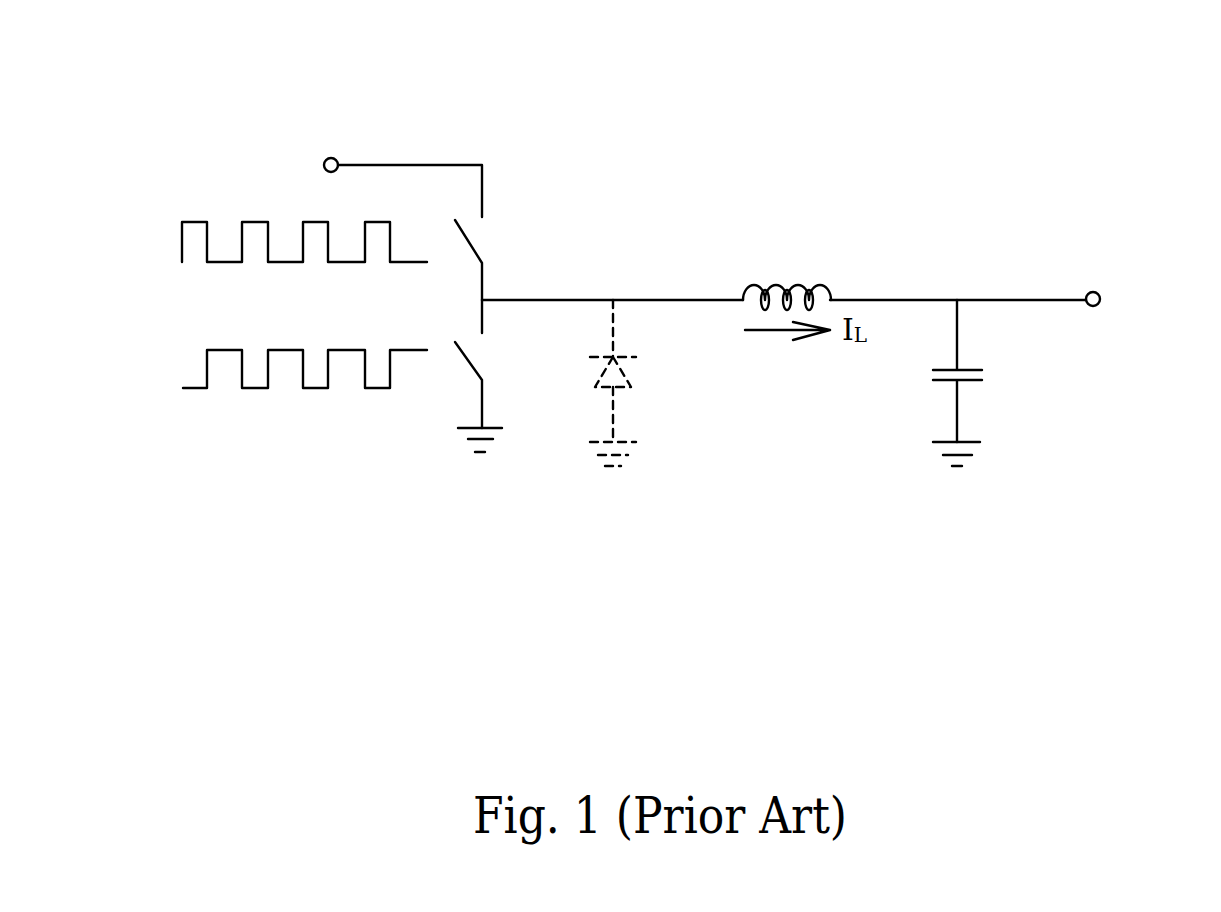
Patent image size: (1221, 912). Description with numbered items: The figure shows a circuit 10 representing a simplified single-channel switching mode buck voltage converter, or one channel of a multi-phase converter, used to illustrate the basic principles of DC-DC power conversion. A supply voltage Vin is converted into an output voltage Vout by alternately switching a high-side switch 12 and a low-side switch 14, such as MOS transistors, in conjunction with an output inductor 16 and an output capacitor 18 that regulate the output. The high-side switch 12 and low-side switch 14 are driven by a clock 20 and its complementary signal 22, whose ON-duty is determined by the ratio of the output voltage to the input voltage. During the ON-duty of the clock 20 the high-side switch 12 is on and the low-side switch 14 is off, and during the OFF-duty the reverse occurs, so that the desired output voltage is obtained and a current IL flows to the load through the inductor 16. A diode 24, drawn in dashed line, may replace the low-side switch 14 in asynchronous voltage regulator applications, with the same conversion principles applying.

The circuit 10 is at (1093, 98).
The high-side switch 12 is at (532, 188).
The low-side switch 14 is at (440, 412).
The output inductor 16 is at (853, 250).
The output capacitor 18 is at (1000, 435).
The clock 20 is at (125, 228).
The complementary signal 22 is at (125, 363).
The diode 24 is at (658, 437).